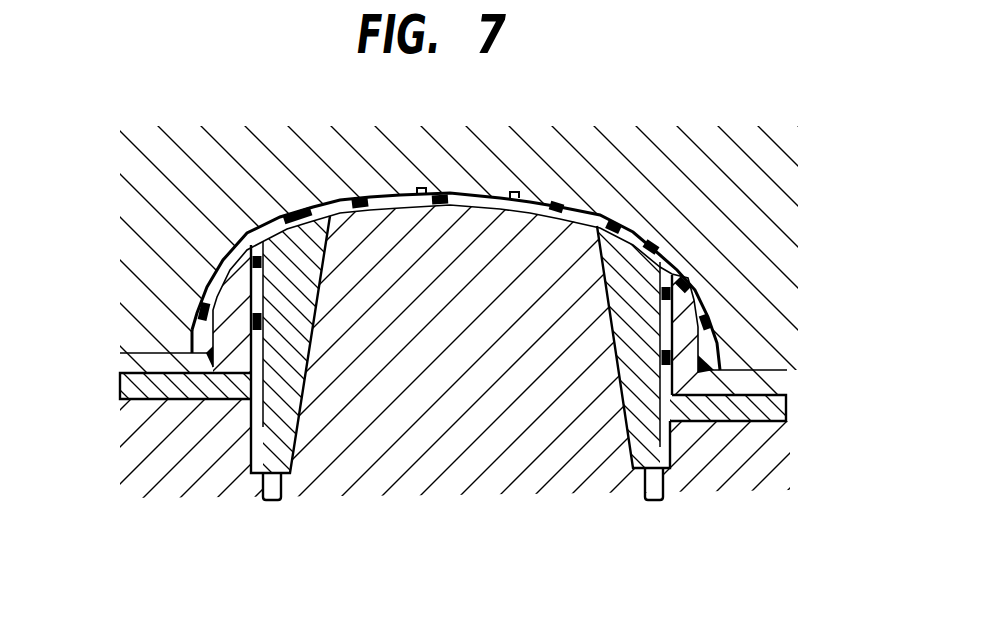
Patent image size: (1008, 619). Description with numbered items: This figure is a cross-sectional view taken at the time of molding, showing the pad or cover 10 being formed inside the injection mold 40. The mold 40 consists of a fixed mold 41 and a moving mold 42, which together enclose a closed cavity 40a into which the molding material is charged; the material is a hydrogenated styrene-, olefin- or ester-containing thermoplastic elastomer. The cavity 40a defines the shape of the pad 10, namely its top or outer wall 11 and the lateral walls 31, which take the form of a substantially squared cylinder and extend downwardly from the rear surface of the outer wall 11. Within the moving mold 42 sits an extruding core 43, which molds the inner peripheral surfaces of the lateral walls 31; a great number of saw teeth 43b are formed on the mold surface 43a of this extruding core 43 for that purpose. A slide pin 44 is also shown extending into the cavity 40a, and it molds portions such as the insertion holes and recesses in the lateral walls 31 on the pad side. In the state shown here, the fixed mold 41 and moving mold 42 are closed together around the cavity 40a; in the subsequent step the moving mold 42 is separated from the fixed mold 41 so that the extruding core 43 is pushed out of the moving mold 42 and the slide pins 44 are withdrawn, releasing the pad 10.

The pad or cover 10 is at (482, 319).
The top or outer wall 11 is at (482, 319).
The lateral walls 31 is at (252, 293).
The injection mold 40 is at (504, 310).
The closed cavity 40a is at (338, 198).
The fixed mold 41 is at (148, 292).
The moving mold 42 is at (93, 243).
The extruding core 43 is at (461, 389).
The mold surface 43a is at (461, 389).
The saw teeth 43b is at (287, 343).
The slide pin 44 is at (193, 397).